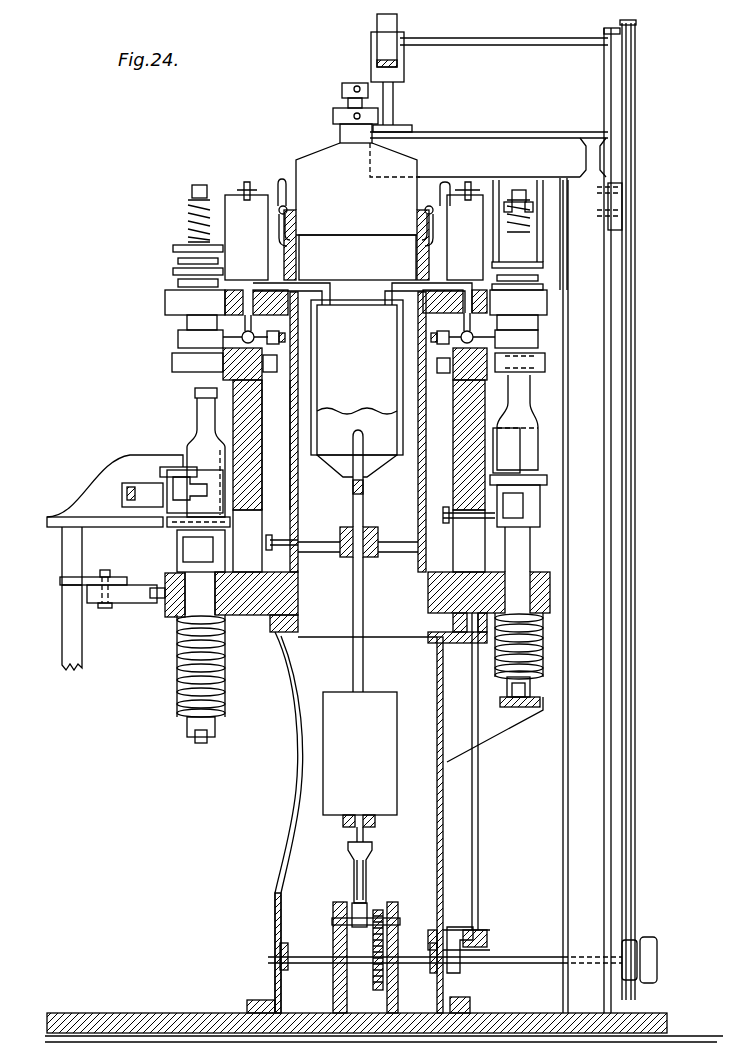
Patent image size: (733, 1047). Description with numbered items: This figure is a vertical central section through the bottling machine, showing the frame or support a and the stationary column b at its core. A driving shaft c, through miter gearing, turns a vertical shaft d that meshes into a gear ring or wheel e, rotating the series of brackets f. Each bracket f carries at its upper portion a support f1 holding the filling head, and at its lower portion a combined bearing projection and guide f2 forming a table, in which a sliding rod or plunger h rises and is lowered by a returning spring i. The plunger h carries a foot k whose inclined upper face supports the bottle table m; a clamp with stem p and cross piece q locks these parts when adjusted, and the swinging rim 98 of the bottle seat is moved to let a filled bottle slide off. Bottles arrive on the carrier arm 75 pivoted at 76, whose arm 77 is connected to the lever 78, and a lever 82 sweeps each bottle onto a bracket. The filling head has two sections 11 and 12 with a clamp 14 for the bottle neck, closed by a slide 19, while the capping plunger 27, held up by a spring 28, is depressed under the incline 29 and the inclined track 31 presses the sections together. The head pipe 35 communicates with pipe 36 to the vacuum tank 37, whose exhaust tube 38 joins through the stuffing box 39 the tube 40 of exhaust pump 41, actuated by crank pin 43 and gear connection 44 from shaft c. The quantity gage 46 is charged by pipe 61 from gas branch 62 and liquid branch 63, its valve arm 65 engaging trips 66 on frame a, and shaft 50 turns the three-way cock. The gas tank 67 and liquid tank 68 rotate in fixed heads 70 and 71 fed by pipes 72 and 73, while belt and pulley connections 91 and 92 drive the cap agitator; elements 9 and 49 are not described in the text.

The belt and pulley connection 91 is at (384, 14).
The belt and pulley connection 92 is at (399, 30).
The fixed head 71 is at (343, 87).
The pipe 73 is at (356, 86).
The fixed head 70 is at (334, 113).
The pipe 72 is at (352, 117).
The liquid tank 68 is at (358, 189).
The gas tank 67 is at (357, 257).
The gas supply branch 62 is at (297, 255).
The liquid supply branch 63 is at (288, 210).
The valve arm 65 is at (279, 200).
The trip 66 is at (445, 182).
The gage supply pipe 61 is at (278, 231).
The quantity gage 46 is at (354, 237).
The fitting 49 is at (247, 185).
The chamfer or incline 29 is at (518, 190).
The inclined track 31 is at (532, 255).
The spring 28 is at (190, 221).
The filling head section 12 is at (175, 266).
The bracket f is at (200, 300).
The vacuum pipe 36 is at (372, 292).
The filling head section 11 is at (178, 340).
The clamp 14 is at (180, 374).
The support f1 is at (170, 355).
The slide 19 is at (254, 460).
The plunger 27 is at (456, 460).
The shaft 50 is at (359, 327).
The vacuum tank 37 is at (358, 432).
The filling head pipe 35 is at (240, 380).
The exhaust tube 38 is at (363, 500).
The stuffing box connection 39 is at (362, 535).
The pump tube 40 is at (346, 624).
The exhaust pump 41 is at (360, 767).
The crank pin 43 is at (355, 905).
The gear connection 44 is at (380, 912).
The driving shaft c is at (292, 962).
The gear ring e is at (357, 618).
The stationary column b is at (274, 892).
The vertical shaft d is at (479, 855).
The bracket 9 is at (534, 706).
The returning spring i is at (180, 650).
The plunger h is at (180, 632).
The combined bearing projection and guide f2 is at (168, 600).
The swinging rim 98 is at (176, 467).
The carrier arm 75 is at (115, 491).
The lever 82 is at (130, 485).
The bottle table m is at (178, 541).
The foot k is at (178, 565).
The pivot 76 is at (84, 598).
The arm 77 is at (118, 560).
The lever 78 is at (125, 603).
The clamp stem p is at (380, 513).
The cross piece q is at (362, 546).
The frame a is at (496, 520).